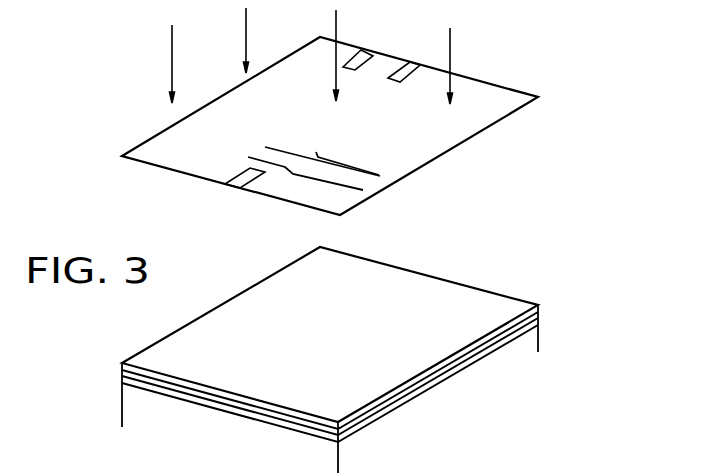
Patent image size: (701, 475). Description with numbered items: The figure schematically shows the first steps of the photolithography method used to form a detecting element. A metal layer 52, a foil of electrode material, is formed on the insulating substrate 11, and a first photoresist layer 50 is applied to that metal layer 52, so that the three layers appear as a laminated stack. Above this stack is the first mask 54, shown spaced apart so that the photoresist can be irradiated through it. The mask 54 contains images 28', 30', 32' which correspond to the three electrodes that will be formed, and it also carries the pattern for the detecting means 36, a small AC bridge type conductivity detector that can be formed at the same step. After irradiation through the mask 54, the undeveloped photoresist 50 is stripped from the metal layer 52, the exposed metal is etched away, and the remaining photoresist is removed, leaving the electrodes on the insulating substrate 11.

The first mask 54 is at (491, 97).
The image for forming electrode 28' is at (377, 36).
The image for forming electrode 32' is at (424, 47).
The image for forming electrode 30' is at (214, 197).
The detecting means 36 is at (383, 182).
The metal layer 52 is at (485, 310).
The first photoresist layer 50 is at (536, 317).
The insulating substrate 11 is at (520, 343).